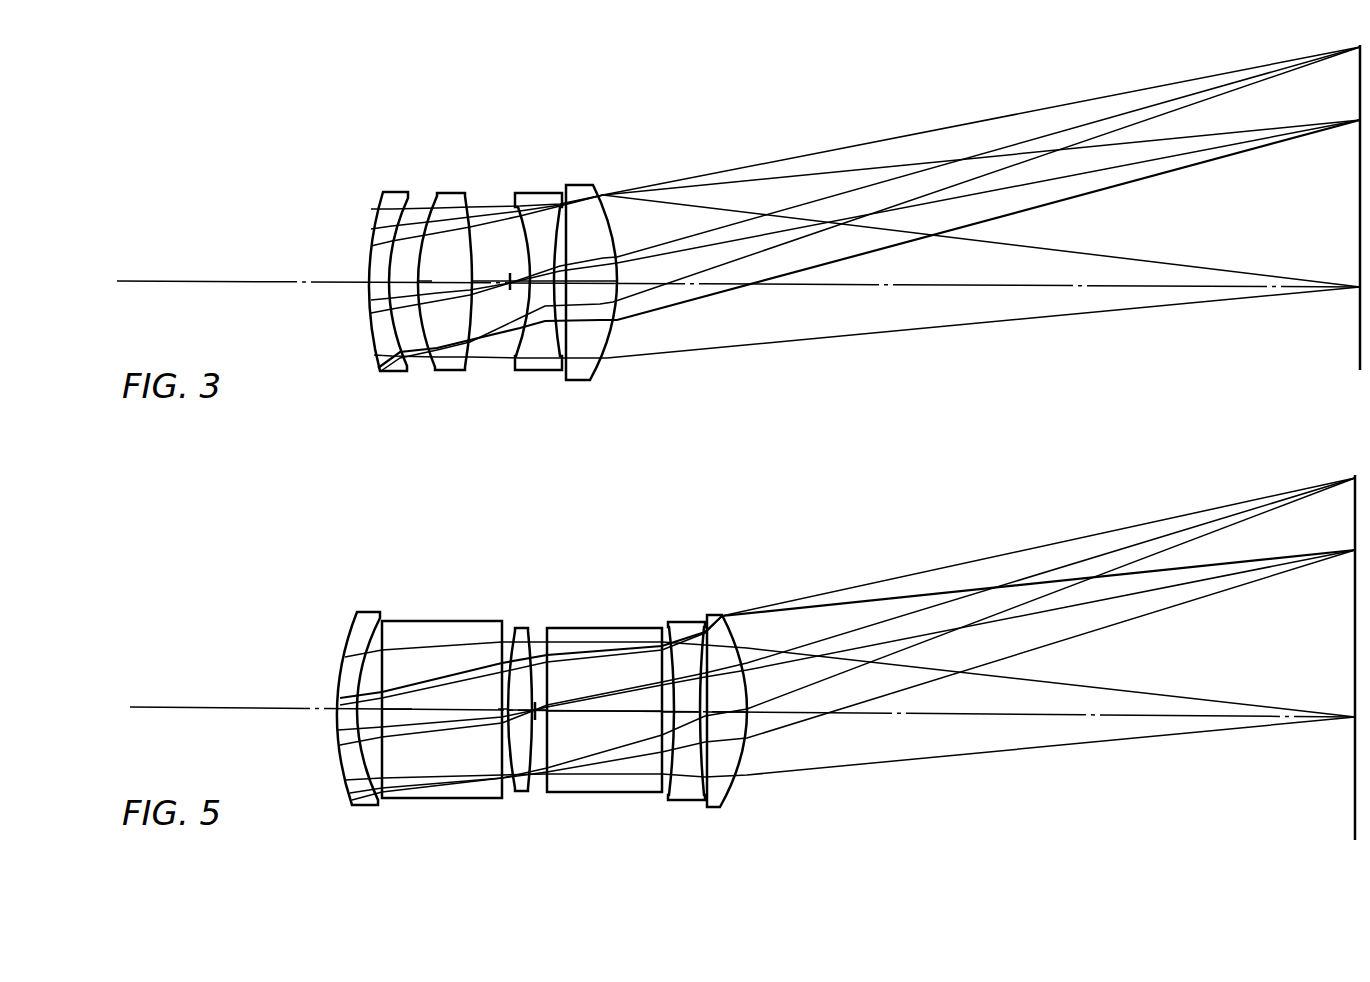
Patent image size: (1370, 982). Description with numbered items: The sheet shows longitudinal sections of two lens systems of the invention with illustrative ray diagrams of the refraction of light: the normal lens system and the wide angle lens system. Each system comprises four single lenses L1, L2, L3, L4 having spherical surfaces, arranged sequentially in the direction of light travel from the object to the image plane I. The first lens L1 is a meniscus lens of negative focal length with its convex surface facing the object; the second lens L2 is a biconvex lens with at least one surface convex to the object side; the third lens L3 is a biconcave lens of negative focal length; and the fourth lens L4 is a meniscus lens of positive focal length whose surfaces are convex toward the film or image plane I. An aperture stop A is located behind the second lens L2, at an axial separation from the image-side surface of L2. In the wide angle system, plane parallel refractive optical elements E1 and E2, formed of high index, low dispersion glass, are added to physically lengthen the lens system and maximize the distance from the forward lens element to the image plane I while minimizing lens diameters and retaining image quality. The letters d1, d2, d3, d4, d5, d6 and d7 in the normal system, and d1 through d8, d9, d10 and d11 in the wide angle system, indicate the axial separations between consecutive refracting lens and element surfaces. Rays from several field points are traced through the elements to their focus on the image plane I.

In FIG. 3, the first lens L1 is at (401, 192).
In FIG. 5, the first lens L1 is at (368, 612).
In FIG. 3, the second lens L2 is at (453, 193).
In FIG. 5, the second lens L2 is at (522, 628).
In FIG. 3, the third lens L3 is at (540, 193).
In FIG. 5, the third lens L3 is at (690, 622).
In FIG. 3, the fourth lens L4 is at (583, 183).
In FIG. 5, the fourth lens L4 is at (720, 617).
In FIG. 5, the plane parallel refractive optical element E1 is at (432, 621).
In FIG. 5, the plane parallel refractive optical element E2 is at (625, 628).
In FIG. 3, the aperture stop A is at (508, 290).
In FIG. 5, the aperture stop A is at (532, 717).
In FIG. 3, the image plane I is at (1358, 352).
In FIG. 5, the image plane I is at (1350, 837).
In FIG. 3, the axial separation d1 is at (369, 284).
In FIG. 5, the axial separation d1 is at (343, 707).
In FIG. 3, the axial separation d2 is at (369, 270).
In FIG. 5, the axial separation d2 is at (365, 712).
In FIG. 3, the axial separation d3 is at (432, 288).
In FIG. 5, the axial separation d3 is at (412, 710).
In FIG. 3, the axial separation d4 is at (480, 279).
In FIG. 5, the axial separation d4 is at (498, 712).
In FIG. 3, the axial separation d5 is at (545, 283).
In FIG. 5, the axial separation d5 is at (517, 712).
In FIG. 3, the axial separation d6 is at (567, 285).
In FIG. 5, the axial separation d6 is at (535, 700).
In FIG. 3, the axial separation d7 is at (587, 287).
In FIG. 5, the axial separation d7 is at (600, 713).
In FIG. 5, the axial separation d8 is at (663, 717).
In FIG. 5, the axial separation d9 is at (687, 713).
In FIG. 5, the axial separation d10 is at (700, 718).
In FIG. 5, the axial separation d11 is at (713, 713).